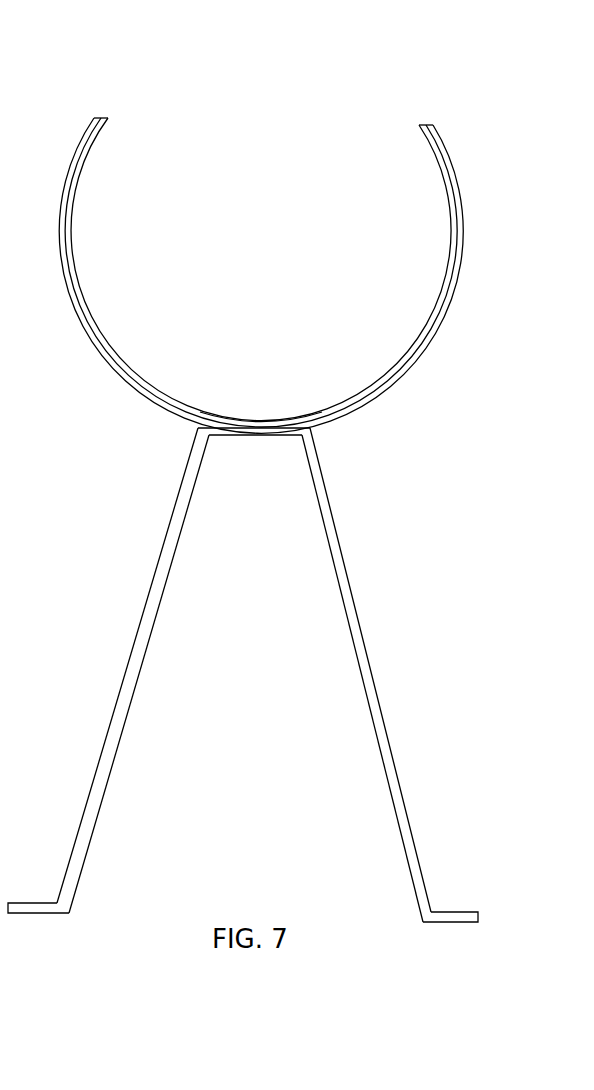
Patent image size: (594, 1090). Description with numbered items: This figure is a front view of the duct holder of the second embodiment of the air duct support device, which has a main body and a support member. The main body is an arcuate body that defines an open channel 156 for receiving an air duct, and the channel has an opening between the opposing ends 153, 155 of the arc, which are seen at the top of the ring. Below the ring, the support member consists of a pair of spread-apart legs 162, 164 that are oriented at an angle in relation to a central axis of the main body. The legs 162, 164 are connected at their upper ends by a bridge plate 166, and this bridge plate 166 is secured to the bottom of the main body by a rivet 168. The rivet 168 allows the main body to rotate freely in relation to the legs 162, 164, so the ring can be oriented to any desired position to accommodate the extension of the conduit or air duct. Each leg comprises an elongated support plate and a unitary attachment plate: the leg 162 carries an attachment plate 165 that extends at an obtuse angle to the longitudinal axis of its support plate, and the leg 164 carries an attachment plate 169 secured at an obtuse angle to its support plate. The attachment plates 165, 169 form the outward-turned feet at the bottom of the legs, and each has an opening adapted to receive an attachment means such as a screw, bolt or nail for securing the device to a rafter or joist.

The opposing end 153 is at (107, 117).
The opposing end 155 is at (421, 126).
The open channel 156 is at (265, 190).
The rivet 168 is at (257, 421).
The bridge plate 166 is at (272, 440).
The leg 162 is at (152, 593).
The leg 164 is at (352, 600).
The attachment plate 165 is at (20, 902).
The attachment plate 169 is at (478, 912).